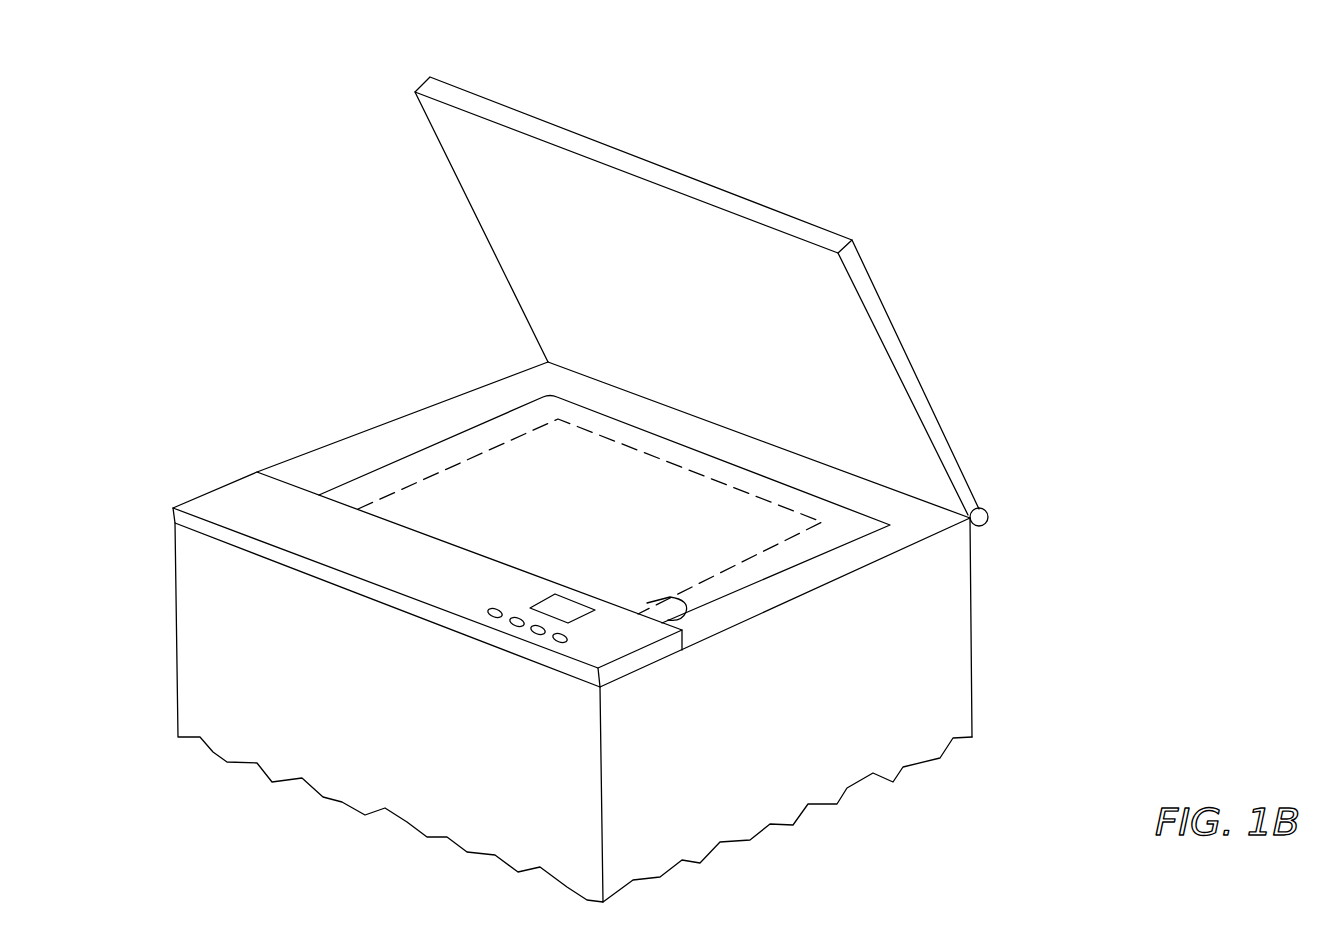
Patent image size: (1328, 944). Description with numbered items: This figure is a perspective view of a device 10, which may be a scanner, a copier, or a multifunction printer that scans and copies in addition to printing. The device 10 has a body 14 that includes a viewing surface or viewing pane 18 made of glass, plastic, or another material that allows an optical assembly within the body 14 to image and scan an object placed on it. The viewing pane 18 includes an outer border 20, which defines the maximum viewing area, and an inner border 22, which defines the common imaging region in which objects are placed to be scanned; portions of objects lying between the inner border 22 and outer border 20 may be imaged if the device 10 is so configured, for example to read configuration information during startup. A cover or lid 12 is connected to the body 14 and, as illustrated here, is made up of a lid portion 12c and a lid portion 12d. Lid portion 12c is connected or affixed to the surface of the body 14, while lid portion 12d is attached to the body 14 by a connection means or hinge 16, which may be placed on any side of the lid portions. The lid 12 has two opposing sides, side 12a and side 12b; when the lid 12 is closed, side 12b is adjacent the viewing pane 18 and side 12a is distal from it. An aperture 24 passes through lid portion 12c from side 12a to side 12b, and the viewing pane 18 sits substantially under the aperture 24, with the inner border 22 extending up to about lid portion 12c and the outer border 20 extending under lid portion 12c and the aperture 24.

The device 10 is at (1014, 110).
The lid 12 is at (922, 357).
The side 12a is at (870, 272).
The side 12b is at (884, 396).
The lid portion 12c is at (250, 511).
The lid portion 12d is at (583, 124).
The body 14 is at (815, 729).
The hinge 16 is at (988, 517).
The viewing pane 18 is at (440, 500).
The outer border 20 is at (682, 600).
The inner border 22 is at (712, 575).
The aperture 24 is at (543, 595).